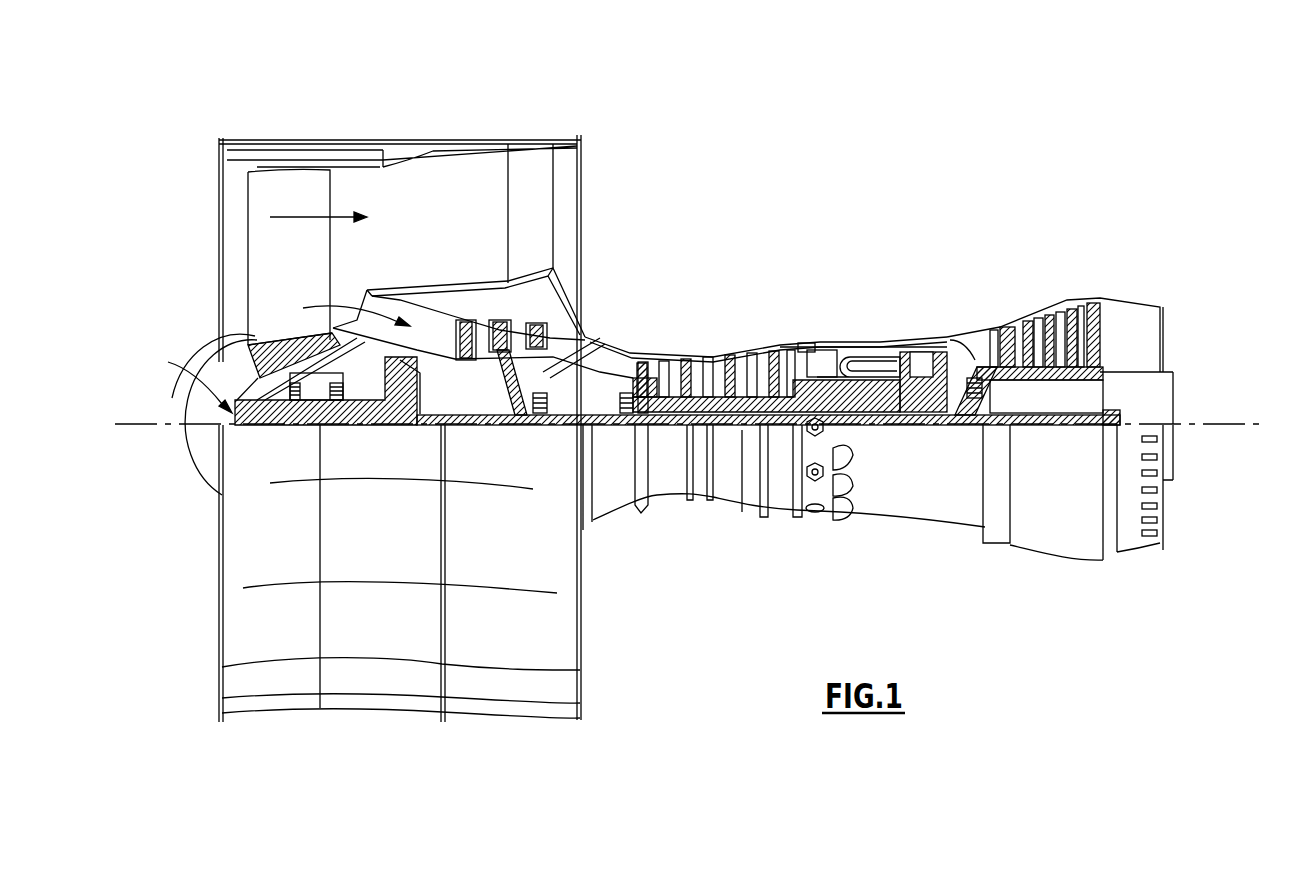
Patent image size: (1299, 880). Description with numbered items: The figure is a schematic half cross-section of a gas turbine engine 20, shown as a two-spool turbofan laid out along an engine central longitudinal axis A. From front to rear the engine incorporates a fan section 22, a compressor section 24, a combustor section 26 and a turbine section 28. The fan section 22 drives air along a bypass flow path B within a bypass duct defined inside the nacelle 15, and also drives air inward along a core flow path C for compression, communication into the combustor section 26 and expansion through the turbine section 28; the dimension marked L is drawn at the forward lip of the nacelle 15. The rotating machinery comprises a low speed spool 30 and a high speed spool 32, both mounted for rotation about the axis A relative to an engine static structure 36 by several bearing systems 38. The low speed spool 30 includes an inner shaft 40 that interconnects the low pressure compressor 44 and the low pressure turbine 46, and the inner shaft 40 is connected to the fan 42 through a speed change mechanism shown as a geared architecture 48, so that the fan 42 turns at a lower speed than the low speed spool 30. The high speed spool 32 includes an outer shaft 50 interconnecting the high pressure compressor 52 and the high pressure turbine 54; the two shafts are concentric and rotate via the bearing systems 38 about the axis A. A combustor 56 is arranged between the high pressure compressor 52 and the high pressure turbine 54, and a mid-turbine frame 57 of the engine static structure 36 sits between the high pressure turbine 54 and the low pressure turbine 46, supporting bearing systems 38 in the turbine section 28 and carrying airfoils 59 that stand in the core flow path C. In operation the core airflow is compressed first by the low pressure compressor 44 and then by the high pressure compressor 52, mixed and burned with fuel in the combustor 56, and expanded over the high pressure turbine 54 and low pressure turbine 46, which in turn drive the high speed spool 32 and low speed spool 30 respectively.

The nacelle 15 is at (403, 140).
The gas turbine engine 20 is at (863, 190).
The fan section 22 is at (328, 128).
The compressor section 24 is at (633, 330).
The combustor section 26 is at (855, 322).
The turbine section 28 is at (1004, 283).
The low speed spool 30 is at (742, 512).
The high speed spool 32 is at (800, 347).
The engine static structure 36 is at (780, 522).
The bearing systems 38 is at (540, 413).
The inner shaft 40 is at (600, 428).
The fan 42 is at (306, 273).
The low pressure compressor 44 is at (507, 340).
The low pressure turbine 46 is at (1047, 303).
The geared architecture 48 is at (408, 410).
The outer shaft 50 is at (862, 410).
The high pressure compressor 52 is at (722, 357).
The high pressure turbine 54 is at (921, 347).
The combustor 56 is at (858, 368).
The mid-turbine frame 57 is at (968, 328).
The airfoils 59 is at (963, 360).
The engine central longitudinal axis A is at (1250, 424).
The bypass flow path B is at (303, 215).
The core flow path C is at (346, 308).
The inlet lip / length L is at (195, 378).